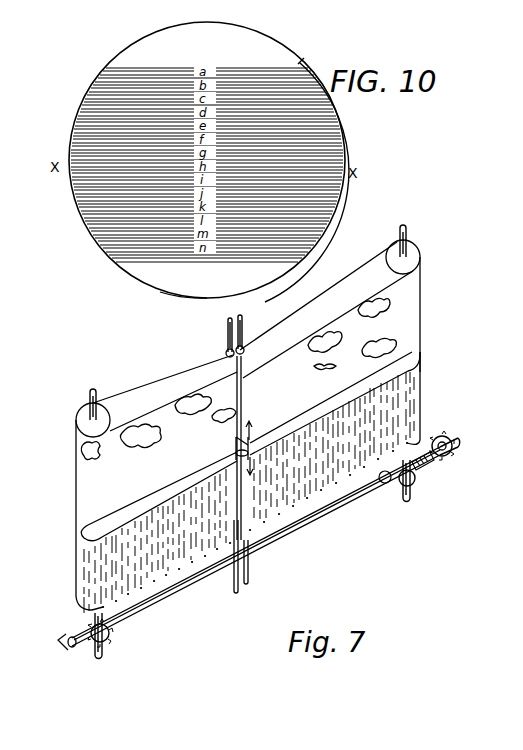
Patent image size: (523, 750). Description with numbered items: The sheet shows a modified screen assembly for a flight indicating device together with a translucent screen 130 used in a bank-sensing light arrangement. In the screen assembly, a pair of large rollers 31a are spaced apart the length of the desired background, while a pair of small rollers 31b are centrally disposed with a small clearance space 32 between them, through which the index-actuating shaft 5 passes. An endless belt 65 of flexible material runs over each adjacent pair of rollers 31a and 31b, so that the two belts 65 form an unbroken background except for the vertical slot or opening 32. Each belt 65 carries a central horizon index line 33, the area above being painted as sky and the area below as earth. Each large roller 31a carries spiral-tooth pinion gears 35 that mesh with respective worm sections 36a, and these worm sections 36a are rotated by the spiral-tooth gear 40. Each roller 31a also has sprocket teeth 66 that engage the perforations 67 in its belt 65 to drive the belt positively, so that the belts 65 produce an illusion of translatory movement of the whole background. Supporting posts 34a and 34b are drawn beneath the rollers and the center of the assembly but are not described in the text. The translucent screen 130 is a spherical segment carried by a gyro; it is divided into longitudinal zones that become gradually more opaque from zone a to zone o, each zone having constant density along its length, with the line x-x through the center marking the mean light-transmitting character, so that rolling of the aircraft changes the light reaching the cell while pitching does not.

In FIG. 10, the translucent screen 130 is at (170, 286).
In FIG. 7, the large rollers 31a is at (410, 253).
In FIG. 7, the small rollers 31b is at (243, 345).
In FIG. 7, the clearance space 32 is at (242, 356).
In FIG. 7, the horizon index lines 33 is at (423, 372).
In FIG. 7, the endless belt 65 is at (413, 316).
In FIG. 7, the sprocket teeth 66 is at (424, 442).
In FIG. 7, the perforations 67 is at (305, 495).
In FIG. 7, the index-actuating shaft 5 is at (255, 445).
In FIG. 7, the support post 34a is at (104, 650).
In FIG. 7, the center support post 34b is at (249, 562).
In FIG. 7, the spiral-tooth pinion gears 35 is at (110, 640).
In FIG. 7, the worm sections 36a is at (72, 655).
In FIG. 7, the spiral-tooth gear 40 is at (452, 452).